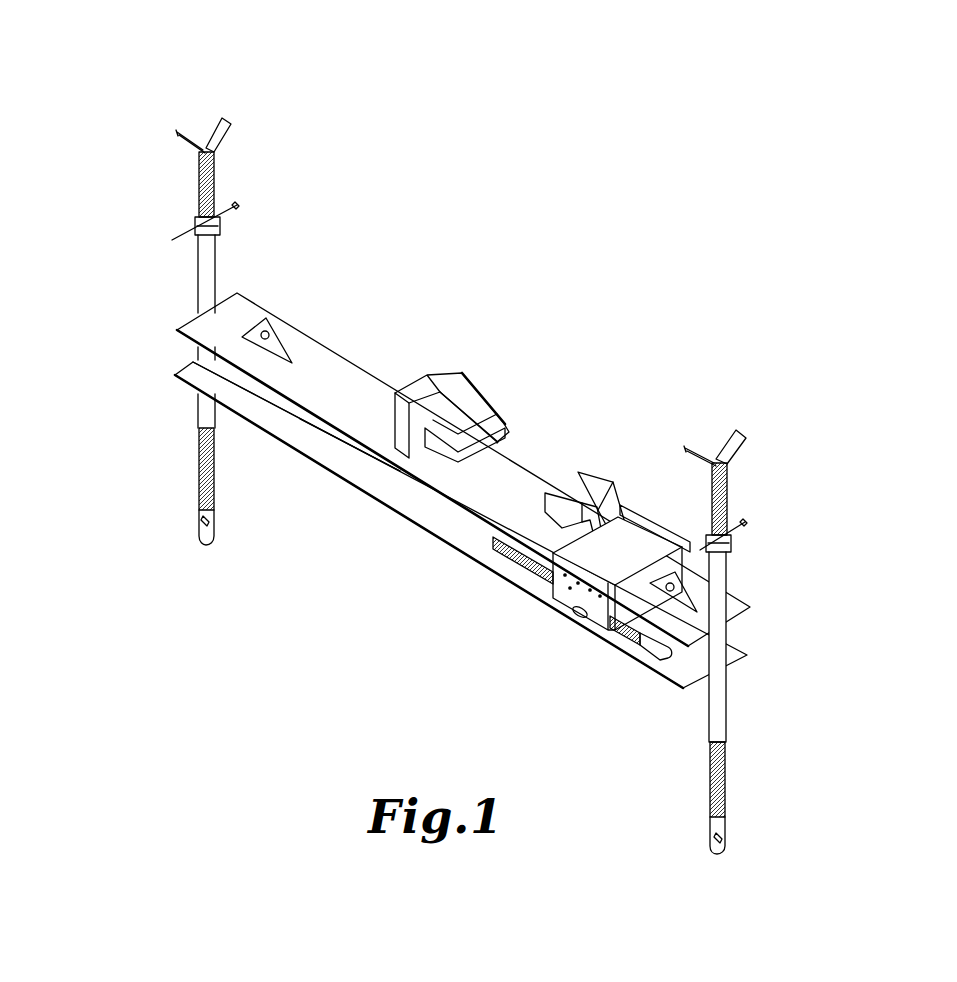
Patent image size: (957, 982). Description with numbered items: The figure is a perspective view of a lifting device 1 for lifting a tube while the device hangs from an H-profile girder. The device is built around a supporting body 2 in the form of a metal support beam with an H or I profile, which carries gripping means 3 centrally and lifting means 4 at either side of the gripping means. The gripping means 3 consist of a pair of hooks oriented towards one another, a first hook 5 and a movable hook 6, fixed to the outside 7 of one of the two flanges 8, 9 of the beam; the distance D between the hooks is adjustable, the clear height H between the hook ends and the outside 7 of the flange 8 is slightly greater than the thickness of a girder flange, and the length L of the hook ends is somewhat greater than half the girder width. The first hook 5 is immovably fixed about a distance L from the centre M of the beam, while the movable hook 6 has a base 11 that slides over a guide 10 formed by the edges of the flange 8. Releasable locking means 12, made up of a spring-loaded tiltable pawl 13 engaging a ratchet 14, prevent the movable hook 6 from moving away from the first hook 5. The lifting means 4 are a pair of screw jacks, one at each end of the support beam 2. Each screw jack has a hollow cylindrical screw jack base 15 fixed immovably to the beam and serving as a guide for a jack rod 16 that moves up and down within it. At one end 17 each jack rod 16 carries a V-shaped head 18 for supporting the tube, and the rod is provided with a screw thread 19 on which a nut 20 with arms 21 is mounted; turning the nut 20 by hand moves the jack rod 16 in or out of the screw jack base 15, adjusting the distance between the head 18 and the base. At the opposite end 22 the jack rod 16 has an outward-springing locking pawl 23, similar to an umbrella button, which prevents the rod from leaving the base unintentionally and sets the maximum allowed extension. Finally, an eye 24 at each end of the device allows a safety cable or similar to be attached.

The lifting device 1 is at (868, 223).
The supporting body 2 is at (348, 367).
The gripping means 3 is at (475, 380).
The lifting means 4 is at (102, 177).
The first hook 5 is at (483, 413).
The movable hook 6 is at (587, 483).
The outside of the flange 7 is at (314, 350).
The flange 8 is at (298, 408).
The flange 9 is at (373, 497).
The guide 10 is at (352, 438).
The base of the movable hook 11 is at (663, 513).
The releasable locking means 12 is at (538, 588).
The spring-loaded tiltable pawl 13 is at (573, 630).
The ratchet 14 is at (627, 643).
The screw jack base 15 is at (205, 280).
The jack rod 16 is at (247, 153).
The end of the jack rod 17 is at (170, 122).
The V-shaped head 18 is at (198, 146).
The screw thread 19 is at (198, 183).
The nut 20 is at (220, 235).
The arms 21 is at (240, 208).
The end of the jack rod 22 is at (177, 497).
The locking pawl 23 is at (210, 515).
The eye 24 is at (275, 328).